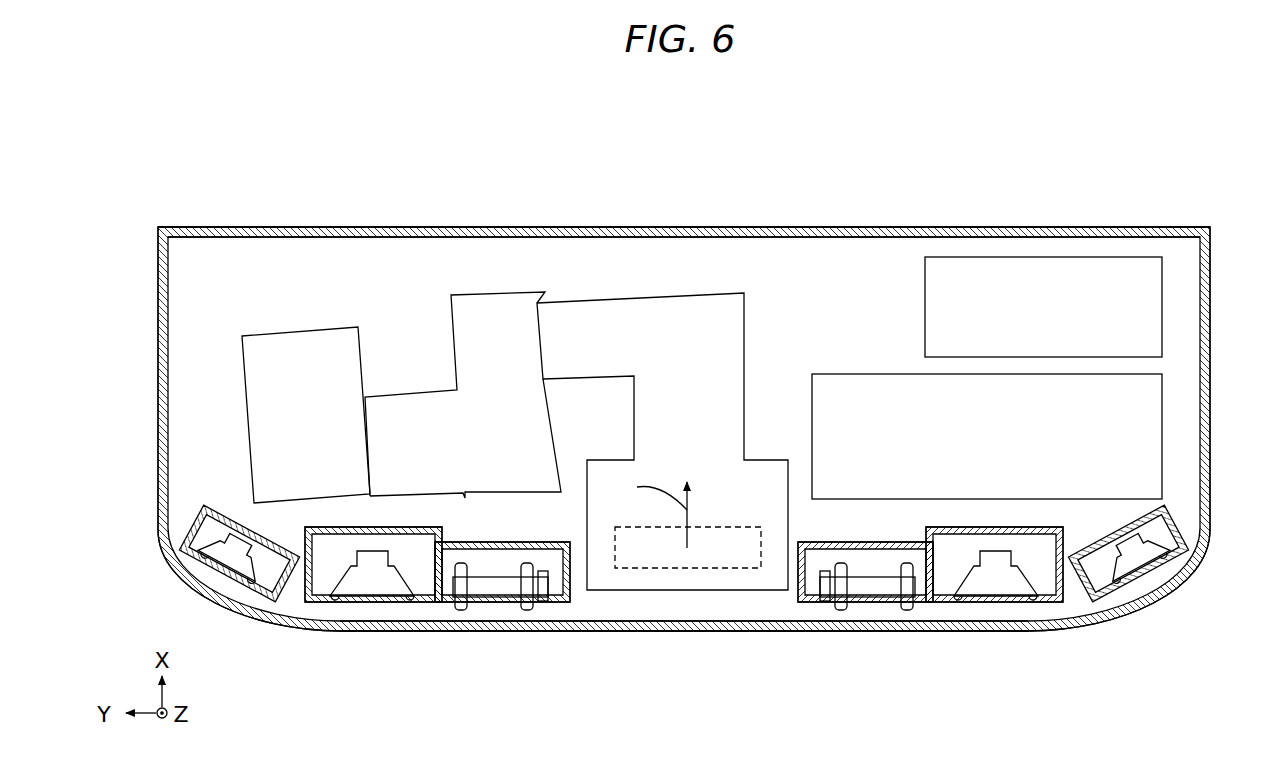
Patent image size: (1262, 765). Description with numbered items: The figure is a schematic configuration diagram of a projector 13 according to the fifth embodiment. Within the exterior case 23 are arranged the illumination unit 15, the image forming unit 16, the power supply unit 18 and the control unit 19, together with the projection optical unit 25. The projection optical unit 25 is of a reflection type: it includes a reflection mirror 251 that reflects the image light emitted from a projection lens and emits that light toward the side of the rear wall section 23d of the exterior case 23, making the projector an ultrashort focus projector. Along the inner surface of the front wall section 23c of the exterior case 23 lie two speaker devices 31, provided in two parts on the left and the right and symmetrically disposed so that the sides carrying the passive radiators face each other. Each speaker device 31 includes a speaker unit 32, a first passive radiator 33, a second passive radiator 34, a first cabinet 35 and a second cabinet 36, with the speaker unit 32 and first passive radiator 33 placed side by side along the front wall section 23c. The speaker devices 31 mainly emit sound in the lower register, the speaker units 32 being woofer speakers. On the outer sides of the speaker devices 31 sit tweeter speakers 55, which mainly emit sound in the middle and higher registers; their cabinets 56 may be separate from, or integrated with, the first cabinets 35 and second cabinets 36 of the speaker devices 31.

The projector 13 is at (652, 190).
The illumination unit 15 is at (297, 355).
The image forming unit 16 is at (507, 312).
The power supply unit 18 is at (1150, 398).
The control unit 19 is at (1153, 318).
The exterior case 23 is at (931, 226).
The front wall section 23c is at (662, 633).
The rear wall section 23d is at (810, 232).
The projection optical unit 25 is at (707, 305).
The reflection mirror 251 is at (722, 570).
The speaker device 31 is at (432, 522).
The speaker unit 32 is at (378, 586).
The first passive radiator 33 is at (482, 600).
The second passive radiator 34 is at (510, 580).
The first cabinet 35 is at (383, 540).
The second cabinet 36 is at (503, 545).
The tweeter speaker 55 is at (235, 567).
The cabinet 56 is at (220, 515).